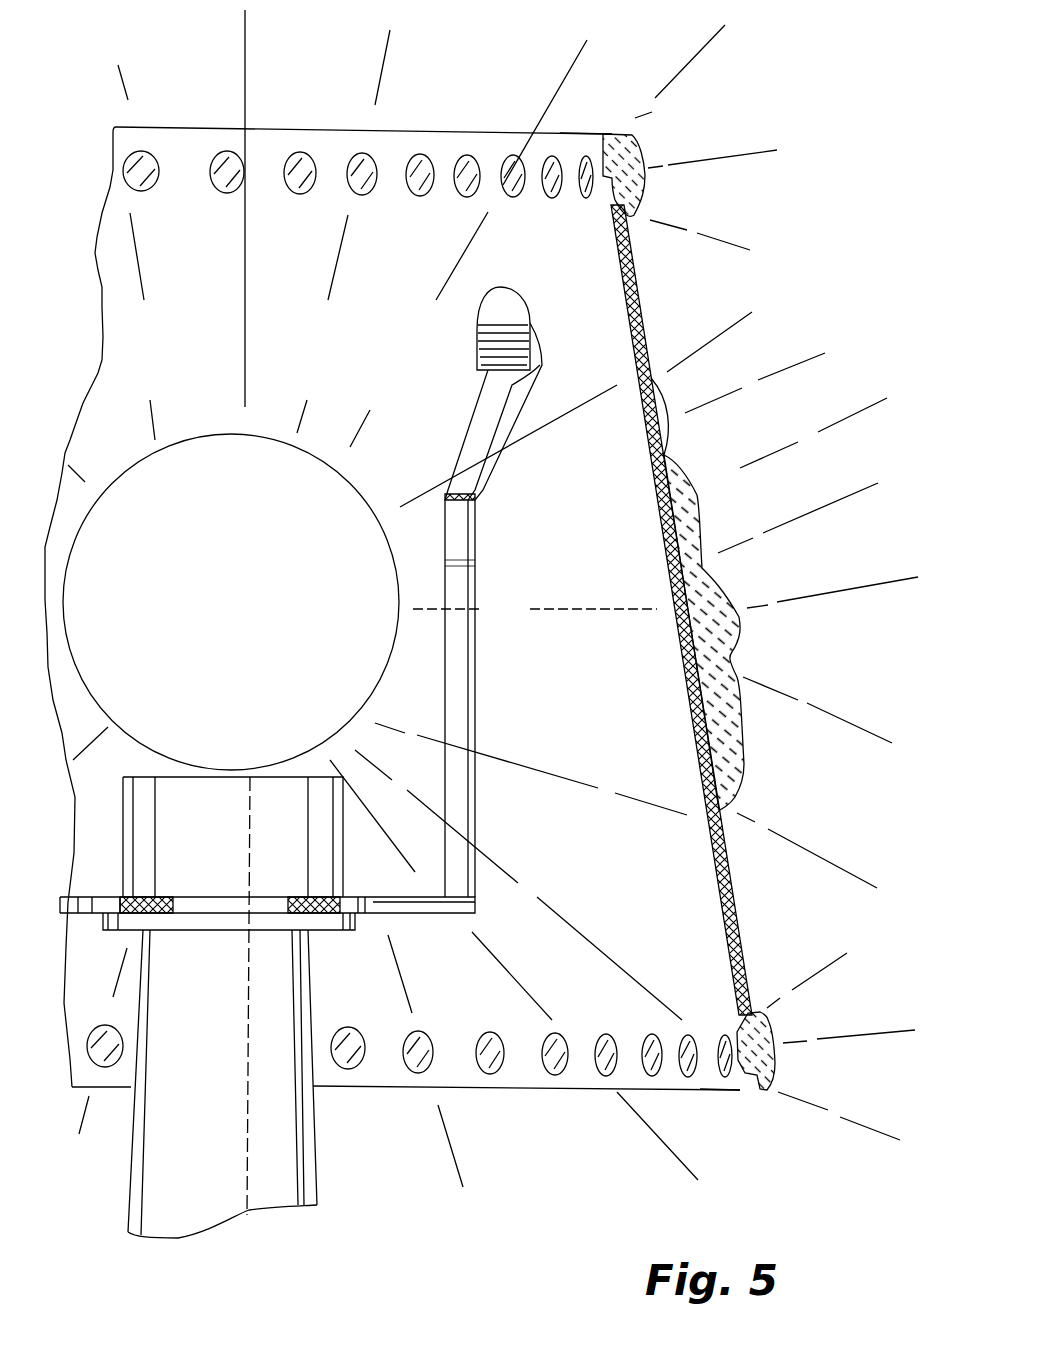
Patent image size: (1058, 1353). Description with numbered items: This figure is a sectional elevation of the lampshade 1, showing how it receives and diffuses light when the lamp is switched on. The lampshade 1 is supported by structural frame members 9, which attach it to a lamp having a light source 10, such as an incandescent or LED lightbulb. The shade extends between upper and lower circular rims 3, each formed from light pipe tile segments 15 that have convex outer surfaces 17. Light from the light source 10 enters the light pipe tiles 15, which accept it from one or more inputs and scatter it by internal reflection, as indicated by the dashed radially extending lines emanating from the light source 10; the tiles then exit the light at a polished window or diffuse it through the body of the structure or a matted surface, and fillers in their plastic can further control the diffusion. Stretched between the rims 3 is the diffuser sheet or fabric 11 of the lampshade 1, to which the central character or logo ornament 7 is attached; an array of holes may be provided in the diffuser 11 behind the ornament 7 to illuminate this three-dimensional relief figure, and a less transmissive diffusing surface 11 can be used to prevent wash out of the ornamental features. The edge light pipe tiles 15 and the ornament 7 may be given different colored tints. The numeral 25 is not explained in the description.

The lamp shade 1 is at (845, 180).
The rims 3 is at (733, 115).
The central ornament 7 is at (702, 503).
The structural frame members 9 is at (478, 437).
The light source 10 is at (243, 620).
The diffuser sheet 11 is at (642, 320).
The light pipe tiles 15 is at (621, 118).
The convex outer surfaces 17 is at (640, 158).
The bolt holes 25 is at (465, 155).